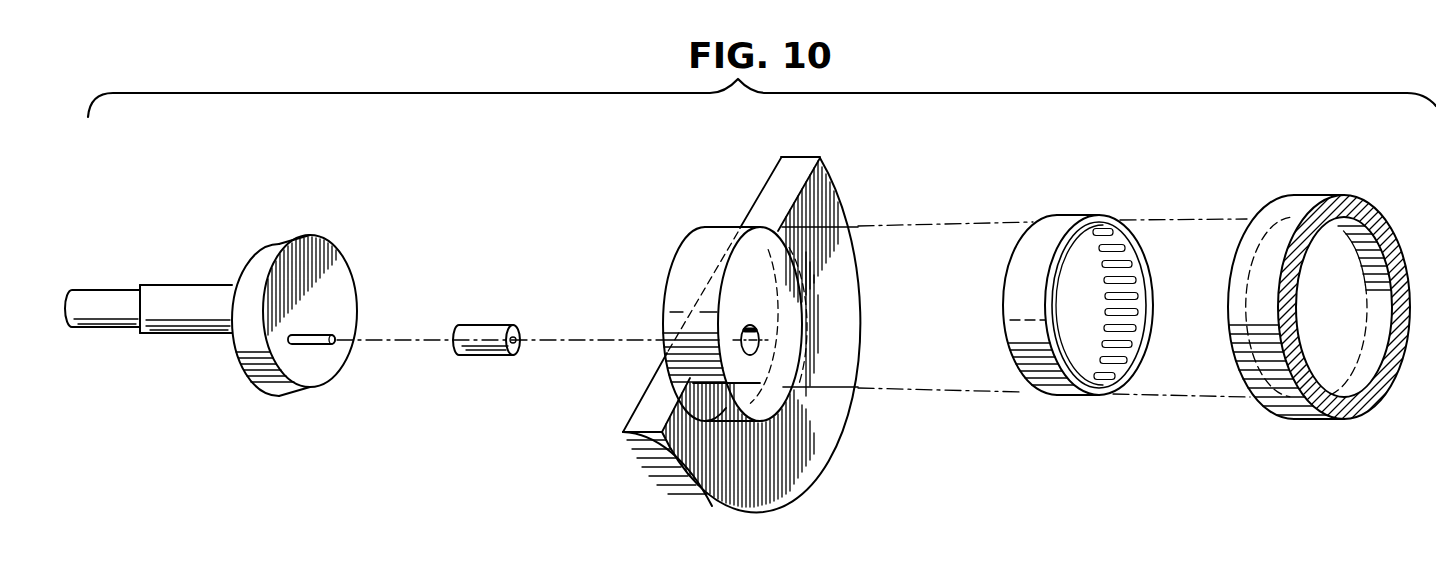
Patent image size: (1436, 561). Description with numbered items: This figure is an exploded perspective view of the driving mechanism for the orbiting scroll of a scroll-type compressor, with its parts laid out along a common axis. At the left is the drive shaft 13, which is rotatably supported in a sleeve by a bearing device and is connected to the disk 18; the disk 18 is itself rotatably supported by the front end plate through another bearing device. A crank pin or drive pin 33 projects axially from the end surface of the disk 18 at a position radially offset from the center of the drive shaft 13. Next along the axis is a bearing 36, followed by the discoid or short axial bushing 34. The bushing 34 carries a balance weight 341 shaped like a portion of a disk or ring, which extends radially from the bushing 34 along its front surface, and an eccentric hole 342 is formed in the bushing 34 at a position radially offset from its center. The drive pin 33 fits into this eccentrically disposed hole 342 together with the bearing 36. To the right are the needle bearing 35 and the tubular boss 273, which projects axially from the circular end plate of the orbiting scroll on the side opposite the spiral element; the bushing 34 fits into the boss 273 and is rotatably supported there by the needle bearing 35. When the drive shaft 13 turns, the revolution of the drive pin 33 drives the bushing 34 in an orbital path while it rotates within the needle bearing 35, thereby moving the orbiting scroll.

The drive shaft 13 is at (113, 287).
The disk 18 is at (270, 250).
The drive pin 33 is at (320, 333).
The bearing 36 is at (492, 322).
The bushing 34 is at (712, 237).
The balance weight 341 is at (797, 453).
The eccentric hole 342 is at (749, 326).
The needle bearing 35 is at (1057, 228).
The tubular boss 273 is at (1297, 207).